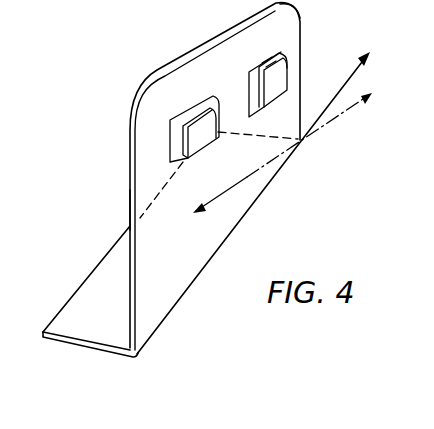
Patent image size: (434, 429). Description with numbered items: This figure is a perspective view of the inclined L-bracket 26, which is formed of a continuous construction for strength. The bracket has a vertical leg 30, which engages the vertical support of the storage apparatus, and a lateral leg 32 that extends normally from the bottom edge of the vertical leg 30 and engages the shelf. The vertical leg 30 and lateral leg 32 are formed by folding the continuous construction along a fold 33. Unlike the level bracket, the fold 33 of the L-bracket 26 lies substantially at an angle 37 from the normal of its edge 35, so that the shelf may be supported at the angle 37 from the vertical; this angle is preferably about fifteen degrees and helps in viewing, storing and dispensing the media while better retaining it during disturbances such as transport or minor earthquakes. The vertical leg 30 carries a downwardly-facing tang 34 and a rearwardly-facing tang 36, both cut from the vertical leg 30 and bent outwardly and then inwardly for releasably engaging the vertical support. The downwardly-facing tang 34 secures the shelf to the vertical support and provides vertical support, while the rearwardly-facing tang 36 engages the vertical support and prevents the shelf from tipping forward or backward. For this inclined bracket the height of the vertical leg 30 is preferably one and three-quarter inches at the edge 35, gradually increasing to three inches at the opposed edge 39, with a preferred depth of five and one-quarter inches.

The L-bracket 26 is at (200, 312).
The vertical leg 30 is at (152, 96).
The lateral leg 32 is at (72, 316).
The fold 33 is at (262, 204).
The downwardly-facing tang 34 is at (281, 77).
The edge 35 is at (302, 43).
The rearwardly-facing tang 36 is at (187, 148).
The angle 37 is at (243, 194).
The opposed edge 39 is at (130, 190).